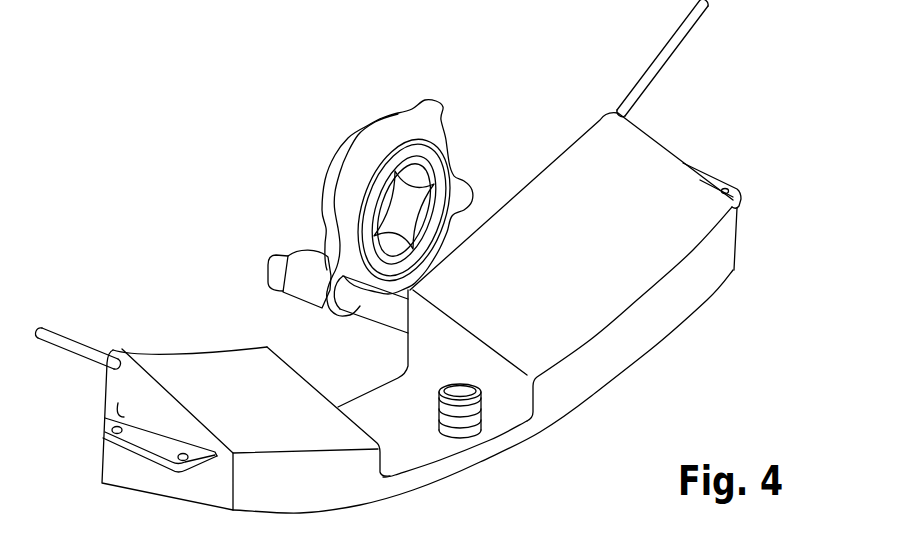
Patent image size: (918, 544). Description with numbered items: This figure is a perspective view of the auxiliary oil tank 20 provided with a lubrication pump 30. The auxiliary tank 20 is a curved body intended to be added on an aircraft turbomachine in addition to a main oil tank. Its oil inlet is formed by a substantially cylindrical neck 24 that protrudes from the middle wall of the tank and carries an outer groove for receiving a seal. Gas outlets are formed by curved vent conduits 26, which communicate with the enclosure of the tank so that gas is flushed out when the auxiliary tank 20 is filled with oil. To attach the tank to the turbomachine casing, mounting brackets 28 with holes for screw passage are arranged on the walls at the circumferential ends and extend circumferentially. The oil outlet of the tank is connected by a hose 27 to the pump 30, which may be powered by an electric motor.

The auxiliary oil tank 20 is at (690, 353).
The cylindrical neck 24 is at (467, 430).
The vent conduit 26 is at (80, 350).
The hose 27 is at (363, 308).
The mounting bracket 28 is at (152, 442).
The pump 30 is at (437, 117).